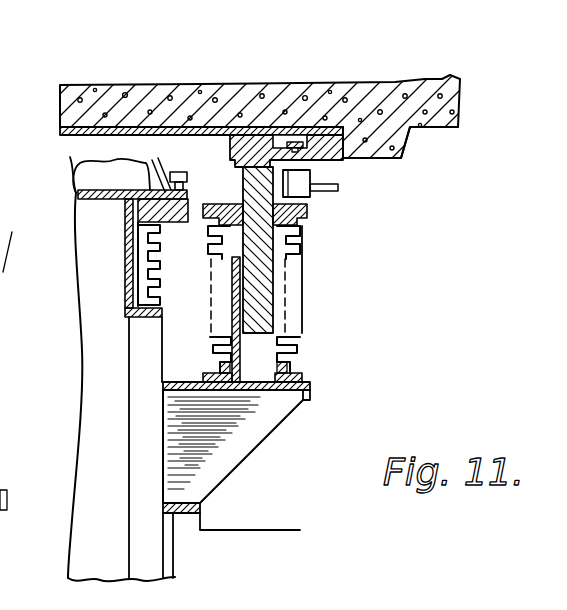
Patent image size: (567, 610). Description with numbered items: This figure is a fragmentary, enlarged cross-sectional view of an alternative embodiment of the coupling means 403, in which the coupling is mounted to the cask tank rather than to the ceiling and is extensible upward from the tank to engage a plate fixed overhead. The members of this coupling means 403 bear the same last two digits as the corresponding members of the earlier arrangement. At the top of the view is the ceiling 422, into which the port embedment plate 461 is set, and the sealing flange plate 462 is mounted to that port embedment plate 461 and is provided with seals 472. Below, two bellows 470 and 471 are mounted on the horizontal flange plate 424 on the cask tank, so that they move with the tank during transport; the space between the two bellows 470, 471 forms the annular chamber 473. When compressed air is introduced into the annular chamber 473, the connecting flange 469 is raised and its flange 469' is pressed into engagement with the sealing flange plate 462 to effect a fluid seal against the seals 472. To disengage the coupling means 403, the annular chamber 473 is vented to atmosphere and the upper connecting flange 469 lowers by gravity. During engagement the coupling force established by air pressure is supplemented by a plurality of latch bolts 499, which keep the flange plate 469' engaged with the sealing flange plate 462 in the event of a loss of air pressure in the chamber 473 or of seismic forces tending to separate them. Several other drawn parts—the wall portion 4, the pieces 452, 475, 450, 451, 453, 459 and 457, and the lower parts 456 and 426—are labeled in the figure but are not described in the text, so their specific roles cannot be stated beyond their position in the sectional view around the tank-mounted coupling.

The port embedment plate 461 is at (122, 122).
The sealing flange plate 462 is at (222, 128).
The seals 472 is at (246, 130).
The flange 469' is at (320, 135).
The ceiling 422 is at (457, 126).
The gasket 452 is at (80, 186).
The fasteners 475 is at (143, 168).
The clamp 450 is at (188, 206).
The latch bolts 499 is at (300, 180).
The connecting flange 469 is at (337, 221).
The wall bracket 451 is at (120, 243).
The bellows seal 453 is at (173, 264).
The support post 459 is at (250, 267).
The coupling means 403 is at (478, 284).
The bellows 470 is at (212, 339).
The bellows 471 is at (331, 298).
The annular chamber 473 is at (262, 348).
The horizontal flange plate 424 is at (310, 382).
The support member 457 is at (263, 442).
The container wall 4 is at (160, 430).
The sealing strip 456 is at (190, 498).
The floor 426 is at (281, 528).